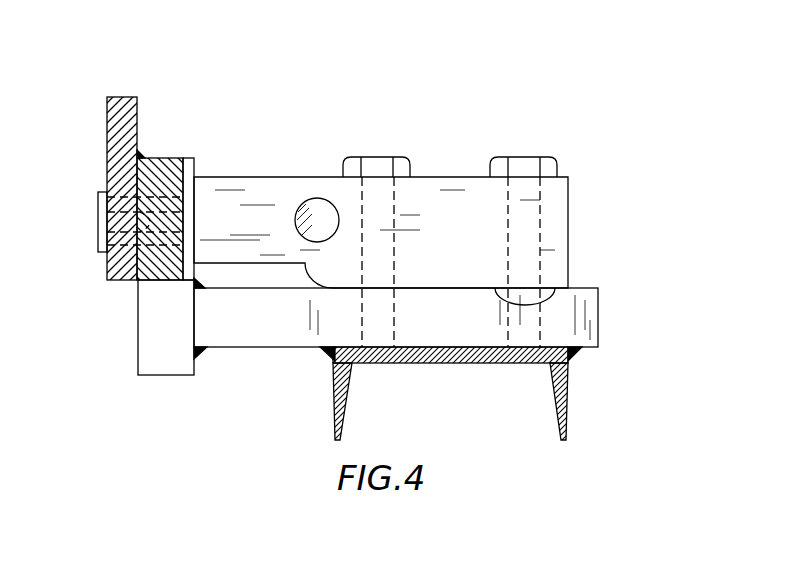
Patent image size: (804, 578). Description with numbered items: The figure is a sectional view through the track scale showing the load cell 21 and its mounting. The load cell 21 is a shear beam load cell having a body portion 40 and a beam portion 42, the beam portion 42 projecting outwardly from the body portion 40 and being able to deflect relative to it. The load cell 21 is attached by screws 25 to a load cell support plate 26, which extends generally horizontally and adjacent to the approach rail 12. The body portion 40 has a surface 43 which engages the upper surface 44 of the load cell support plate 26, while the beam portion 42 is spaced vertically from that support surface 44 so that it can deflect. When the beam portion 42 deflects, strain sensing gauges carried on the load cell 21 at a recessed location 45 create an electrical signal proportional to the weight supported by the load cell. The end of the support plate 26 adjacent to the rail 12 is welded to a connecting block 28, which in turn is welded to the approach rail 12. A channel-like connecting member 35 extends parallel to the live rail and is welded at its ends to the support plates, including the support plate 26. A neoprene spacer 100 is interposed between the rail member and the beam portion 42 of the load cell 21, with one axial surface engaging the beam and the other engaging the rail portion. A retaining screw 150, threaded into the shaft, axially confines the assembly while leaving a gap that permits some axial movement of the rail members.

The approach rail 12 is at (140, 98).
The load cell 21 is at (453, 160).
The screws 25 is at (377, 157).
The load cell support plate 26 is at (585, 320).
The connecting block 28 is at (148, 343).
The connecting member 35 is at (567, 388).
The body portion 40 is at (558, 230).
The beam portion 42 is at (245, 192).
The surface 43 is at (555, 288).
The upper surface 44 is at (437, 288).
The recessed location 45 is at (312, 210).
The neoprene spacer 100 is at (186, 176).
The retaining screw 150 is at (107, 222).